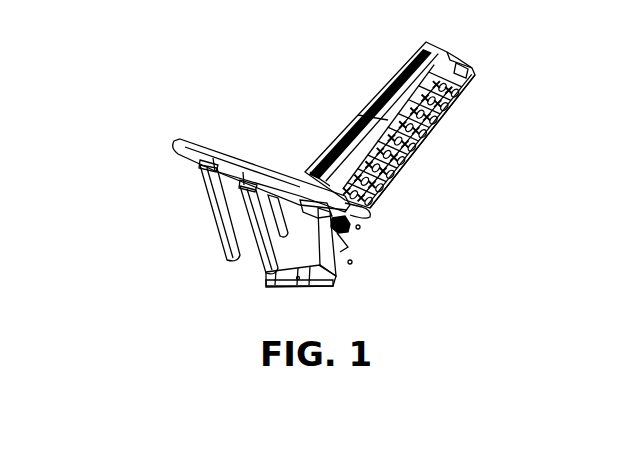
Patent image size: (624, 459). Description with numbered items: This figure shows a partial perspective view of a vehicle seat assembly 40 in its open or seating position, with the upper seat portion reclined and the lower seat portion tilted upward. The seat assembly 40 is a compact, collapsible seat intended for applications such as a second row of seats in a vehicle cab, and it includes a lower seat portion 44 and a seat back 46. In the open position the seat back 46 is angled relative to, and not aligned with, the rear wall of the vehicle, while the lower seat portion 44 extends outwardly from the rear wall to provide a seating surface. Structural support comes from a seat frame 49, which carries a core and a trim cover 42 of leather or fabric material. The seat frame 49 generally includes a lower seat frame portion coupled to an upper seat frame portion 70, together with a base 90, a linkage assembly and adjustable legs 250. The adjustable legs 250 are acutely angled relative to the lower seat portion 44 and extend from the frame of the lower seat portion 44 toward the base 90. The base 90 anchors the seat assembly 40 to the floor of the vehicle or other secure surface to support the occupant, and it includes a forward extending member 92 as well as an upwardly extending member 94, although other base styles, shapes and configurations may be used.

The seat assembly 40 is at (132, 351).
The trim cover 42 is at (405, 65).
The lower seat portion 44 is at (220, 147).
The seat back 46 is at (459, 59).
The seat frame 49 is at (438, 124).
The upper seat frame portion 70 is at (476, 80).
The base 90 is at (332, 277).
The forward extending member 92 is at (303, 287).
The upwardly extending member 94 is at (352, 240).
The adjustable legs 250 is at (265, 267).